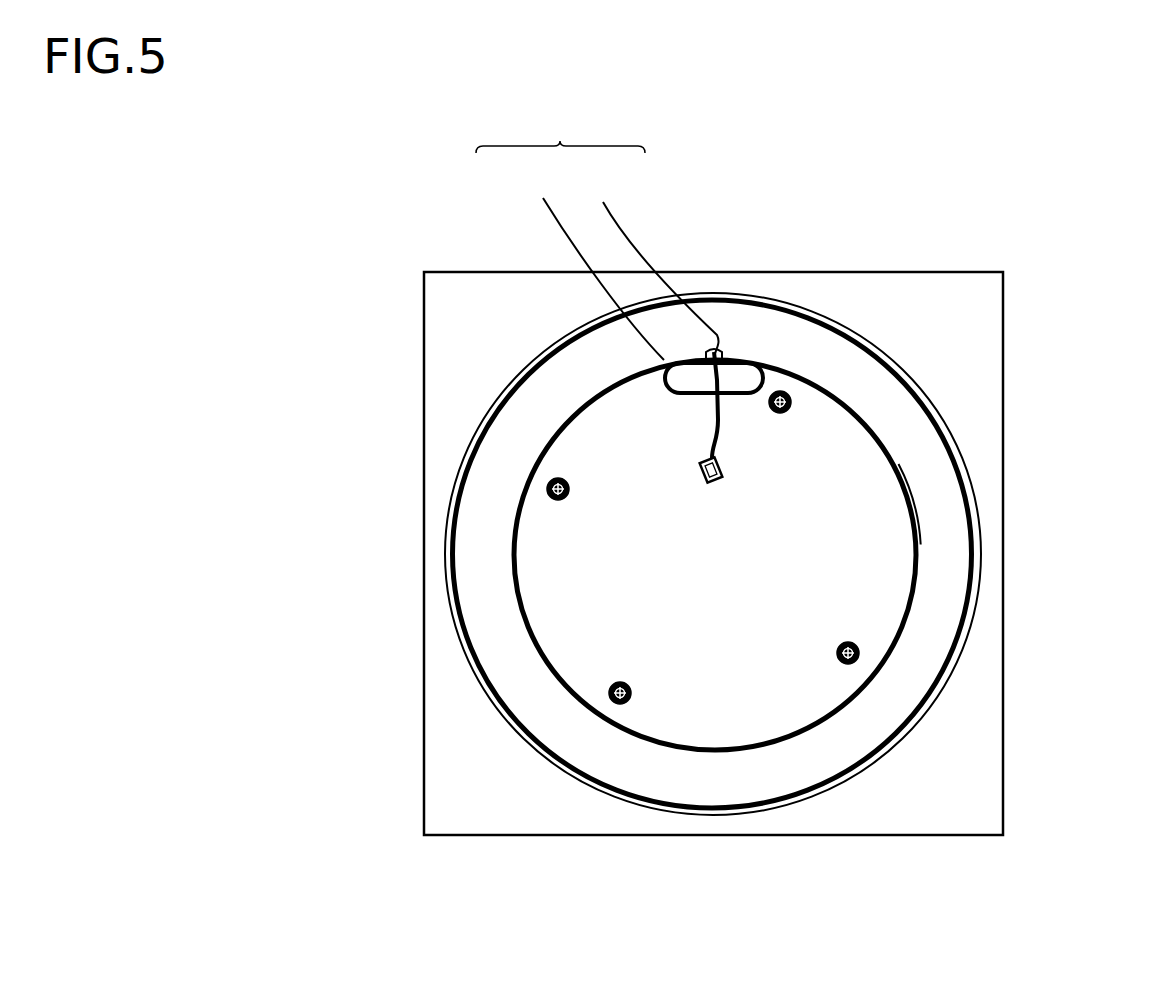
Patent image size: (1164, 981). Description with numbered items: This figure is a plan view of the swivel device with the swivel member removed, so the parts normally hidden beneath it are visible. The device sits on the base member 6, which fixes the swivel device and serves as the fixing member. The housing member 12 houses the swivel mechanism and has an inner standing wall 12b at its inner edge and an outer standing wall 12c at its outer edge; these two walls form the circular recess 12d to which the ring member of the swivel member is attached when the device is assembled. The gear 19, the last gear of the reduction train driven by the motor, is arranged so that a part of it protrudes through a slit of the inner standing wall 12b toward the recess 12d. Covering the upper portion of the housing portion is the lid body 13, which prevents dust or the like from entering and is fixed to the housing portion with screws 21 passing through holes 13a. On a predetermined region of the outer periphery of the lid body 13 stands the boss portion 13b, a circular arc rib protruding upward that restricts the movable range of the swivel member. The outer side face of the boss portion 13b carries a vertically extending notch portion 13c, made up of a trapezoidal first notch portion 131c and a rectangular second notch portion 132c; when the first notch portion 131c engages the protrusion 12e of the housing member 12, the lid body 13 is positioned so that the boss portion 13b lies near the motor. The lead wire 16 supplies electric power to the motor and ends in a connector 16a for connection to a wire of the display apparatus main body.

The base member 6 is at (1003, 297).
The housing member 12 is at (984, 517).
The inner standing wall 12b is at (817, 728).
The outer standing wall 12c is at (966, 640).
The circular recess 12d is at (955, 573).
The protrusion 12e is at (722, 357).
The lid body 13 is at (857, 467).
The holes 13a is at (778, 414).
The boss portion 13b is at (748, 380).
The notch portion 13c is at (597, 233).
The first notch portion 131c is at (649, 261).
The second notch portion 132c is at (572, 261).
The lead wire 16 is at (714, 437).
The connector 16a is at (720, 486).
The gear 19 is at (913, 490).
The screws 21 is at (791, 404).